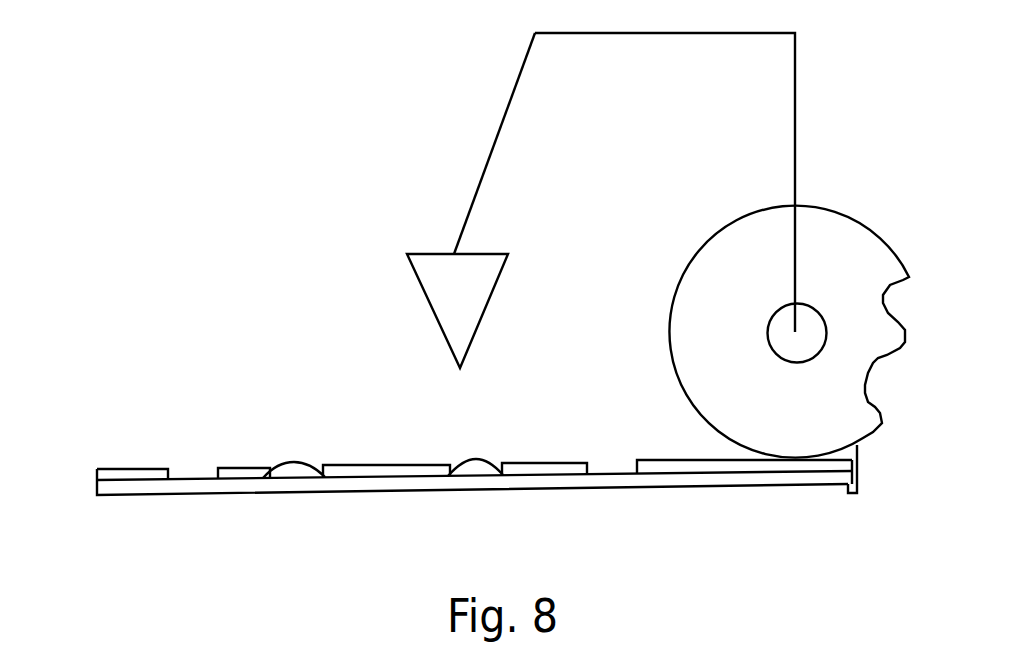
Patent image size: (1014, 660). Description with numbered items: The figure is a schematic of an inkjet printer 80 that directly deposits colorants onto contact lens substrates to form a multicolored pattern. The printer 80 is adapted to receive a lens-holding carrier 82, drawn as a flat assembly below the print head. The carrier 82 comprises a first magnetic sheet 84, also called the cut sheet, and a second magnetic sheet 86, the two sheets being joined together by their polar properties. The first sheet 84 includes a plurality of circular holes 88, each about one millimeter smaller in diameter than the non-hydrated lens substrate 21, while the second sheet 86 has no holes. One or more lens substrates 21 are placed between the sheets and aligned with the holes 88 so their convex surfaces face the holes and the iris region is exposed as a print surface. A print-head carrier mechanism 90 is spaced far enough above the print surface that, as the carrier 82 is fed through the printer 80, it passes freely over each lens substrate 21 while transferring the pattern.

The inkjet printer 80 is at (345, 200).
The print-head carrier mechanism 90 is at (499, 183).
The lens-holding carrier 82 is at (90, 473).
The second magnetic sheet 86 is at (195, 496).
The first magnetic sheet 84 is at (237, 467).
The circular holes 88 is at (165, 477).
The lens substrate 21 is at (315, 467).